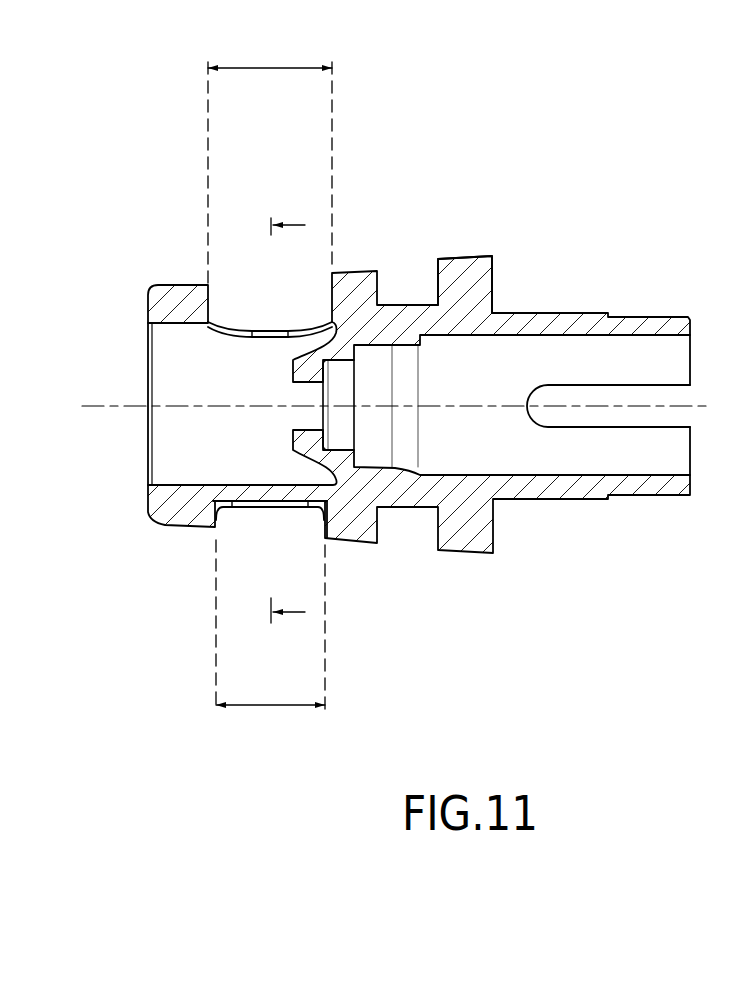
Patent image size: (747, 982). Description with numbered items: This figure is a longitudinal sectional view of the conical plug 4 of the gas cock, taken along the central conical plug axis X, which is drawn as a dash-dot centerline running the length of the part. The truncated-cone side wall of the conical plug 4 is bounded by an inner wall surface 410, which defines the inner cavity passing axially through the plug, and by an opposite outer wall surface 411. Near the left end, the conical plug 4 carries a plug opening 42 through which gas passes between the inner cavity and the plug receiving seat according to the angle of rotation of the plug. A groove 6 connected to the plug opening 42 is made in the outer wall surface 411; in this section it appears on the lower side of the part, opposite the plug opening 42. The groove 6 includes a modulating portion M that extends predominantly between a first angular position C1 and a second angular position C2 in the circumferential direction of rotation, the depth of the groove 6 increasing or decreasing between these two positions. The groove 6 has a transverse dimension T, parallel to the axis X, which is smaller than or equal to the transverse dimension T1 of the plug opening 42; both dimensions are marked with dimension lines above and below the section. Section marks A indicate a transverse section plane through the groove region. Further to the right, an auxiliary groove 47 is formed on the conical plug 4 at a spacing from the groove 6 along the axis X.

The conical plug 4 is at (562, 203).
The plug opening 42 is at (293, 305).
The auxiliary groove 47 is at (406, 295).
The inner wall surface 410 is at (193, 323).
The outer wall surface 411 is at (188, 283).
The groove 6 is at (296, 527).
The first angular position C1 is at (266, 328).
The second angular position C2 is at (252, 510).
The transverse dimension T is at (270, 625).
The transverse dimension of the plug opening T1 is at (270, 163).
The section plane A is at (296, 419).
The modulating portion M is at (11, 295).
The central conical plug axis X is at (93, 407).